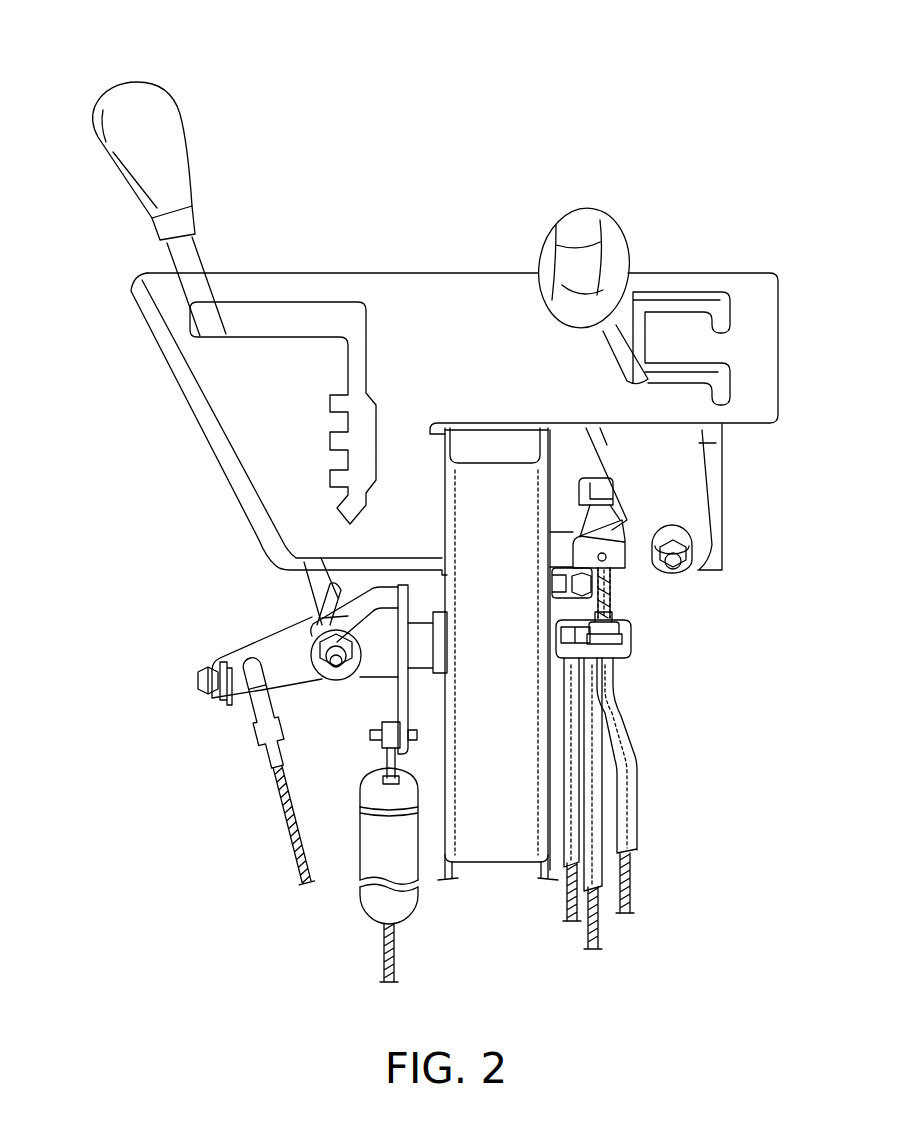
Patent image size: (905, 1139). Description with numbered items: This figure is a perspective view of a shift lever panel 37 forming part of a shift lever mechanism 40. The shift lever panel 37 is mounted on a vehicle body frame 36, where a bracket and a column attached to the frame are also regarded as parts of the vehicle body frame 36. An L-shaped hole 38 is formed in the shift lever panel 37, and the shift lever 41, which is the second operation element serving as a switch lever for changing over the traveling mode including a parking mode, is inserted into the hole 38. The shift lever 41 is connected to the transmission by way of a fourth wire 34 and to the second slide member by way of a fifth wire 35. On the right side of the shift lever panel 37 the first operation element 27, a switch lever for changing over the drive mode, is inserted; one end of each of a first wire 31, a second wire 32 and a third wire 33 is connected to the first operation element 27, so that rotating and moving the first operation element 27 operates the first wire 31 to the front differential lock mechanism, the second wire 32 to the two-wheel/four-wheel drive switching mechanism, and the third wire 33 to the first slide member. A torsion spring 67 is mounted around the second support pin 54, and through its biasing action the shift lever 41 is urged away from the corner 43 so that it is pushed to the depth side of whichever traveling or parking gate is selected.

The first operation element 27 is at (573, 215).
The first wire 31 is at (567, 892).
The second wire 32 is at (630, 876).
The third wire 33 is at (600, 928).
The fourth wire 34 is at (380, 950).
The fifth wire 35 is at (300, 824).
The vehicle body frame 36 is at (503, 850).
The shift lever panel 37 is at (428, 290).
The L-shaped hole 38 is at (268, 330).
The shift lever mechanism 40 is at (190, 561).
The shift lever 41 is at (138, 100).
The corner 43 is at (356, 306).
The second support pin 54 is at (338, 664).
The torsion spring 67 is at (318, 600).